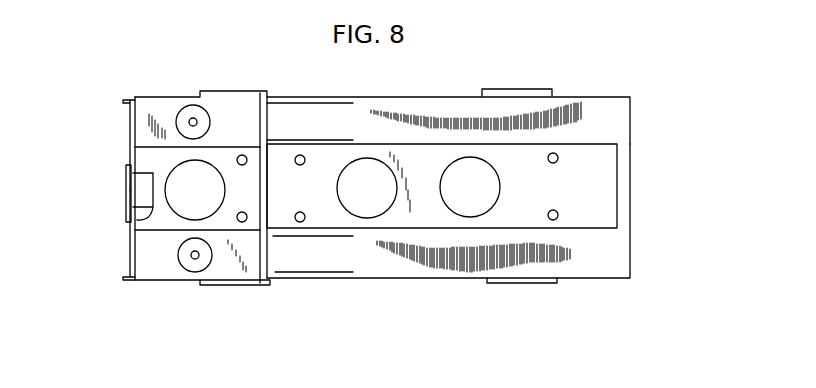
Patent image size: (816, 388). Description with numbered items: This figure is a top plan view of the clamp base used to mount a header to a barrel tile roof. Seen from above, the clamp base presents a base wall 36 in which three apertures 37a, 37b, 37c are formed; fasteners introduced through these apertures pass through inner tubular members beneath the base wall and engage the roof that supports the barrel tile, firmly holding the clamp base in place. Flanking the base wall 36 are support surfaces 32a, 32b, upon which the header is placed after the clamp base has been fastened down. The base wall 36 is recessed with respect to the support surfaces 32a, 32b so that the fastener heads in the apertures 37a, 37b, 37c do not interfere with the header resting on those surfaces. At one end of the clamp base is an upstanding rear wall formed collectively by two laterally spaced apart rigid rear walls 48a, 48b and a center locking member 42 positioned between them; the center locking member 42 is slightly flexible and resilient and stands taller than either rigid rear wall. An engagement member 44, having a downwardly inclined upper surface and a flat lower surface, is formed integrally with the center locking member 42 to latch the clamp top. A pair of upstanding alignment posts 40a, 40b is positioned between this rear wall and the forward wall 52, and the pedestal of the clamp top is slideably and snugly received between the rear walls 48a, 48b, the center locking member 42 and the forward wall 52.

The support surface 32a is at (608, 255).
The support surface 32b is at (603, 70).
The base wall 36 is at (600, 183).
The aperture 37a is at (133, 182).
The aperture 37b is at (367, 214).
The aperture 37c is at (474, 213).
The alignment post 40a is at (190, 270).
The alignment post 40b is at (190, 105).
The center locking member 42 is at (128, 166).
The engagement member 44 is at (128, 218).
The rigid rear wall 48a is at (130, 245).
The rigid rear wall 48b is at (128, 125).
The forward wall 52 is at (270, 118).